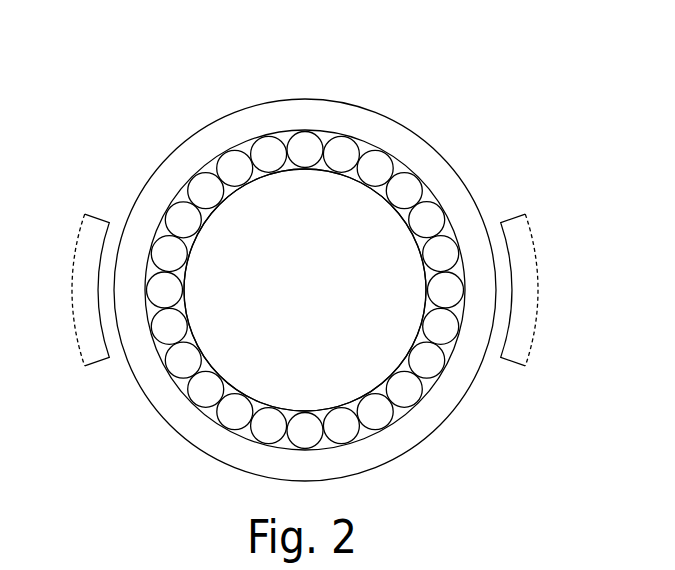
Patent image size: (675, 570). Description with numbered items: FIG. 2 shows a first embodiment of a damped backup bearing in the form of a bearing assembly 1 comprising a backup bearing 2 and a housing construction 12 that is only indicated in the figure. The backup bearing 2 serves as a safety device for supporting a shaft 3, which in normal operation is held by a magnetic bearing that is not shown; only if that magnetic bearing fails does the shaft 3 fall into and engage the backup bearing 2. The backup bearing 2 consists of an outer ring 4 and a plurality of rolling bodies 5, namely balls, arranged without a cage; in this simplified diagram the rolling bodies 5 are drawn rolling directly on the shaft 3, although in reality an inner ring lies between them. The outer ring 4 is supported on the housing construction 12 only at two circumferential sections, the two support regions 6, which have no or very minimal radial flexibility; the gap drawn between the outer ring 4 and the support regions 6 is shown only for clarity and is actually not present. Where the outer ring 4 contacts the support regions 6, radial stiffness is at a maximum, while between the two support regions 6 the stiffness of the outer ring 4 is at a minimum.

The bearing assembly 1 is at (303, 241).
The backup bearing 2 is at (364, 99).
The shaft 3 is at (303, 303).
The outer ring 4 is at (223, 110).
The rolling bodies 5 is at (178, 193).
The support regions 6 is at (491, 345).
The housing construction 12 is at (95, 378).